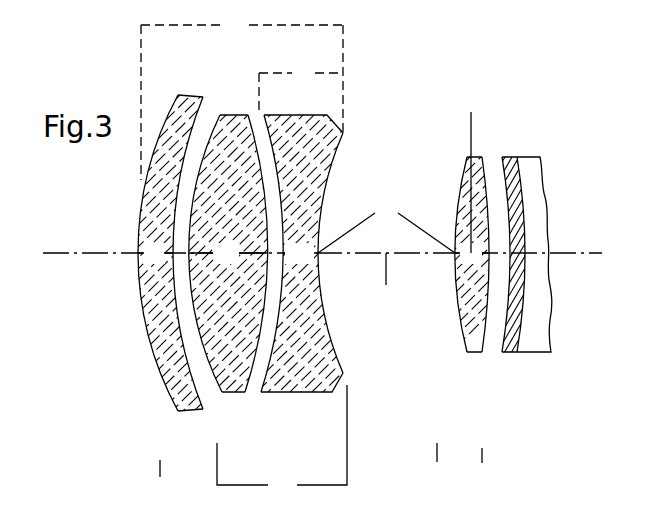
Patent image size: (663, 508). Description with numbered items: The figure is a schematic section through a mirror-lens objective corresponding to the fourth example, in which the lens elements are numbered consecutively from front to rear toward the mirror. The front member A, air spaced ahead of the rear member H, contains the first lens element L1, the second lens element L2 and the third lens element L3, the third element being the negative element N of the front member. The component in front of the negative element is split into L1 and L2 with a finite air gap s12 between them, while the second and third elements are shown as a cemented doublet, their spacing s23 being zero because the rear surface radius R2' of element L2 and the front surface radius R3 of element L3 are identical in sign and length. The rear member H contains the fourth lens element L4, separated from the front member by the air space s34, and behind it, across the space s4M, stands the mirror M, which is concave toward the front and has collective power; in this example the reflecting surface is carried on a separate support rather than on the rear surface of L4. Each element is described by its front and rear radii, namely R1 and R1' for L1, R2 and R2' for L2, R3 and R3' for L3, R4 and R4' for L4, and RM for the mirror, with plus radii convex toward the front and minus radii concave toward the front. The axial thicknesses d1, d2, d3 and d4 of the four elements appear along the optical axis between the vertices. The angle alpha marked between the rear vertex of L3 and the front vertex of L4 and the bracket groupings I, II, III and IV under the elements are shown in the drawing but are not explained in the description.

The first lens element L1 is at (173, 405).
The second lens element L2 is at (232, 378).
The third lens element L3 is at (313, 382).
The fourth lens element L4 is at (467, 343).
The mirror reflecting surface M is at (502, 347).
The front surface radius of element 1 R1 is at (139, 253).
The rear surface radius of element 1 R1' is at (174, 237).
The front surface radius of element 2 R2 is at (198, 218).
The rear surface radius of element 2 R2' is at (235, 226).
The front surface radius of element 3 R3 is at (256, 227).
The rear surface radius of element 3 R3' is at (346, 250).
The front surface radius of element 4 R4 is at (448, 235).
The rear surface radius of element 4 R4' is at (492, 227).
The mirror radius RM is at (503, 159).
The thickness of element 1 d1 is at (155, 254).
The thickness of element 2 d2 is at (228, 254).
The thickness of element 3 d3 is at (300, 254).
The thickness of element 4 d4 is at (472, 254).
The spacing between elements 1 and 2 s12 is at (220, 390).
The spacing between elements 2 and 3 s23 is at (253, 392).
The spacing between elements 3 and 4 s34 is at (394, 289).
The spacing between element 4 and the mirror s4M is at (502, 340).
The angle alpha is at (386, 226).
The rear member H is at (468, 168).
The front member A is at (242, 97).
The negative element N is at (301, 89).
The first lens unit I is at (164, 498).
The second lens unit II is at (292, 498).
The third lens unit III is at (445, 488).
The fourth lens unit IV is at (493, 473).